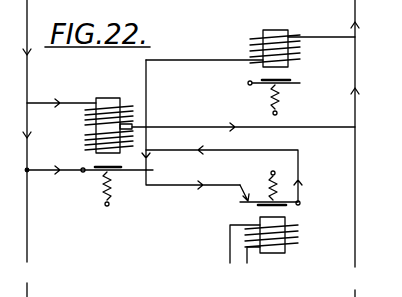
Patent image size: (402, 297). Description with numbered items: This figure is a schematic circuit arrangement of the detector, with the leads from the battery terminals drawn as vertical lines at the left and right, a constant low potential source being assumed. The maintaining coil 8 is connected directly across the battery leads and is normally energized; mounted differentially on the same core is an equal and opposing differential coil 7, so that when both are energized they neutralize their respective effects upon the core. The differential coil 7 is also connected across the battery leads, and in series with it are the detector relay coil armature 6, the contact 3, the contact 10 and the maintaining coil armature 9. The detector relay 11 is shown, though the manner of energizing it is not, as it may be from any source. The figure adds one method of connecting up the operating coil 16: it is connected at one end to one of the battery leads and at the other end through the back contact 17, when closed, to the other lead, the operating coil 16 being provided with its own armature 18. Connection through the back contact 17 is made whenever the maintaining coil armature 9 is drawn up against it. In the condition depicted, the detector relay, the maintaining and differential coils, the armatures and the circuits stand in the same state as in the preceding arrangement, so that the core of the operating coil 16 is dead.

The contact 3 is at (238, 182).
The detector relay coil armature 6 is at (278, 195).
The differential coil 7 is at (100, 143).
The maintaining coil 8 is at (100, 125).
The maintaining coil armature 9 is at (89, 186).
The contact 10 is at (146, 176).
The detector relay 11 is at (280, 240).
The operating coil 16 is at (265, 48).
The back contact 17 is at (150, 160).
The armature 18 is at (289, 97).